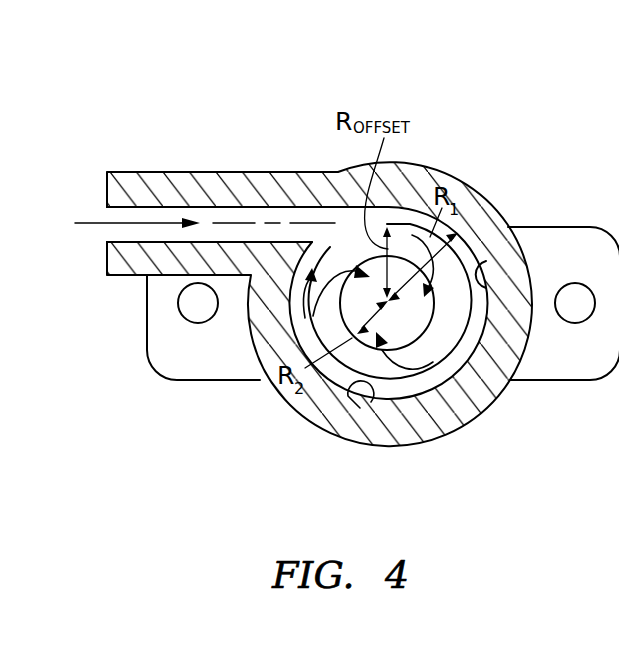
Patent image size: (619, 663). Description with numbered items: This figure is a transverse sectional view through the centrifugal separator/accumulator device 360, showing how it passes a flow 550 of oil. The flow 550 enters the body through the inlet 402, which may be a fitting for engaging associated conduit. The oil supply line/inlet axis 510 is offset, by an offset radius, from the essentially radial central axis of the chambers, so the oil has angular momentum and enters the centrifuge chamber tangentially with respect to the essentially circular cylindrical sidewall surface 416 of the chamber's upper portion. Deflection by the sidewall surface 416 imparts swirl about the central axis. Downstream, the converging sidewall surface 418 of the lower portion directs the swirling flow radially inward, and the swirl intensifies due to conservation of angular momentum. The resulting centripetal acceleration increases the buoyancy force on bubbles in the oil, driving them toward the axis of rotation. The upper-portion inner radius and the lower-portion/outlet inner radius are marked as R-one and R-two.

The device 360 is at (192, 81).
The inlet 402 is at (96, 261).
The oil supply line/inlet axis 510 is at (223, 215).
The flow 550 is at (140, 212).
The sidewall surface 416 is at (490, 280).
The sidewall surface 418 is at (371, 402).